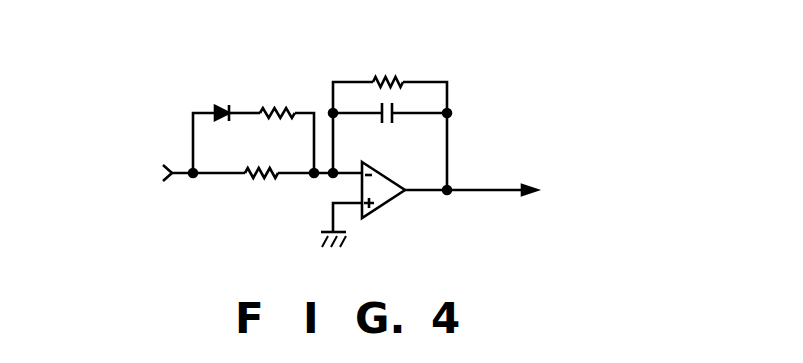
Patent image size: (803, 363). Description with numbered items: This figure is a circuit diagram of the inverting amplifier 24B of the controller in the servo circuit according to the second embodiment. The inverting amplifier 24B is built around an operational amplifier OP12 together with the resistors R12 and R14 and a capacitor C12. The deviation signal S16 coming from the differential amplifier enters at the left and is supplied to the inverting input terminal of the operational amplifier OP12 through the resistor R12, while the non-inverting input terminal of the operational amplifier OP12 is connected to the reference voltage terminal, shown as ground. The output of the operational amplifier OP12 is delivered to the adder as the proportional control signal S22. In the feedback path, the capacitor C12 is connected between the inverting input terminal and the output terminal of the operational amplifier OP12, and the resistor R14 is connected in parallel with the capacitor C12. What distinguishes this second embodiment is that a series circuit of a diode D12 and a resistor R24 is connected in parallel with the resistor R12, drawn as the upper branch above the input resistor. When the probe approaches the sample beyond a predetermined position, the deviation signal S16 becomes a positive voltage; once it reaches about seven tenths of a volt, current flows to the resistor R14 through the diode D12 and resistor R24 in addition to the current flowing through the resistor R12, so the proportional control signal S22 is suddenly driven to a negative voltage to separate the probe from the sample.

The inverting amplifier 24B is at (404, 141).
The deviation signal S16 is at (150, 171).
The proportional control signal S22 is at (543, 192).
The diode D12 is at (226, 108).
The resistor R24 is at (283, 105).
The resistor R12 is at (268, 168).
The resistor R14 is at (389, 73).
The capacitor C12 is at (387, 120).
The operational amplifier OP12 is at (385, 208).